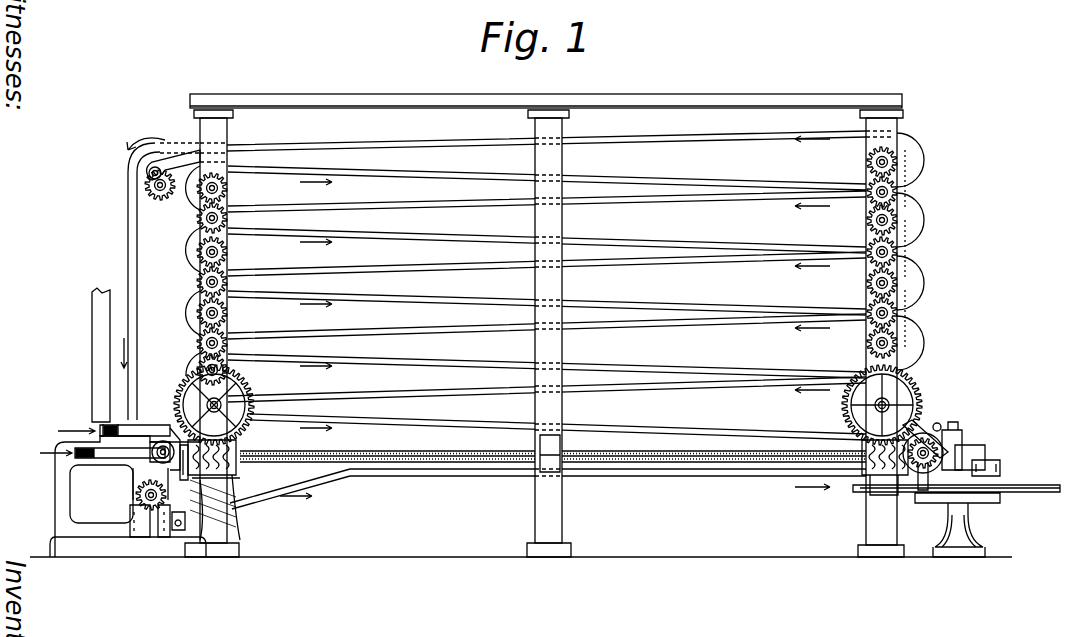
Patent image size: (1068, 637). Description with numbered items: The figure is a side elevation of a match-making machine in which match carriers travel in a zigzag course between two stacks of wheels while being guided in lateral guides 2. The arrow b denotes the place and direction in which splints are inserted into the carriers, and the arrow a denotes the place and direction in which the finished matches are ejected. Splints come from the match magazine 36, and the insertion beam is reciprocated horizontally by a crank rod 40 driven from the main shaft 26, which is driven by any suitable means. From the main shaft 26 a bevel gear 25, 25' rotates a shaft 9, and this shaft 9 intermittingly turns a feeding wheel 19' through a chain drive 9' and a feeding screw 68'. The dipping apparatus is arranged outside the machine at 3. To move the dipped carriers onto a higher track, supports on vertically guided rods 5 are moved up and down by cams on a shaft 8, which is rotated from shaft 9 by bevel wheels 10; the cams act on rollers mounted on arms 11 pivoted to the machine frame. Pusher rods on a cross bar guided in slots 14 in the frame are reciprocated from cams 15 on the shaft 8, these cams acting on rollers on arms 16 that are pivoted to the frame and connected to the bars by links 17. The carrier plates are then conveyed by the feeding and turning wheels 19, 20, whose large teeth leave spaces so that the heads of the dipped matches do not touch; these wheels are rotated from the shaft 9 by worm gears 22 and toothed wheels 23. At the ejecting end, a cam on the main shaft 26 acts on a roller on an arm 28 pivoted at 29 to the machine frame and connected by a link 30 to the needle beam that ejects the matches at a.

The lateral guides 2 is at (422, 481).
The dipping apparatus 3 is at (876, 493).
The vertically guided rods 5 is at (968, 450).
The shaft 8 is at (922, 465).
The shaft 9 is at (557, 460).
The chain drive 9' is at (224, 528).
The bevel wheels 10 is at (928, 445).
The arms 11 is at (962, 440).
The slots 14 is at (995, 472).
The cams 15 is at (968, 485).
The arms 16 is at (952, 432).
The links 17 is at (985, 462).
The feeding and turning wheels 19 is at (193, 271).
The feeding wheel 19' is at (125, 489).
The feeding and turning wheels 20 is at (906, 300).
The worm gears 22 is at (866, 462).
The toothed wheels 23 is at (902, 280).
The bevel gear 25 is at (165, 433).
The bevel gear 25' is at (218, 516).
The main shaft 26 is at (150, 452).
The arm 28 is at (186, 522).
The pivot 29 is at (168, 540).
The link 30 is at (141, 426).
The match magazine 36 is at (92, 345).
The crank rod 40 is at (105, 455).
The feeding screw 68' is at (131, 552).
The arrow a is at (66, 429).
The arrow b is at (45, 453).